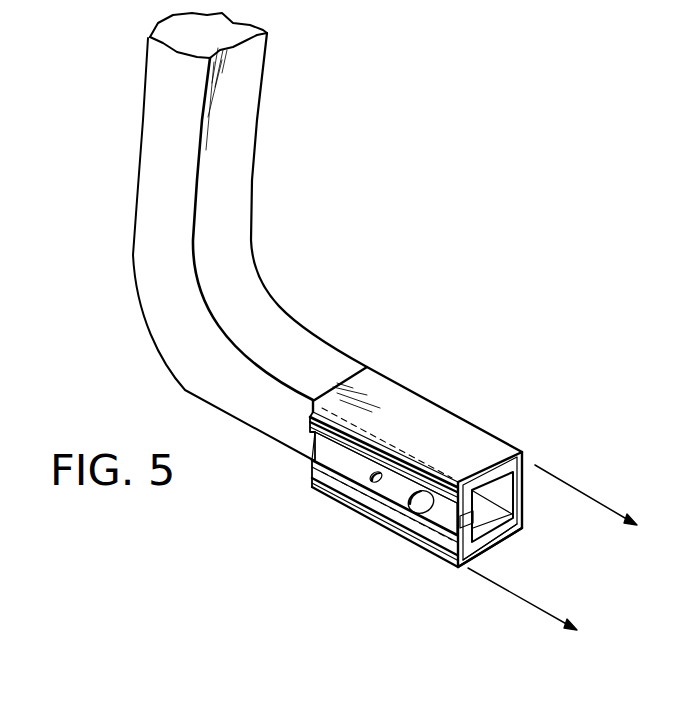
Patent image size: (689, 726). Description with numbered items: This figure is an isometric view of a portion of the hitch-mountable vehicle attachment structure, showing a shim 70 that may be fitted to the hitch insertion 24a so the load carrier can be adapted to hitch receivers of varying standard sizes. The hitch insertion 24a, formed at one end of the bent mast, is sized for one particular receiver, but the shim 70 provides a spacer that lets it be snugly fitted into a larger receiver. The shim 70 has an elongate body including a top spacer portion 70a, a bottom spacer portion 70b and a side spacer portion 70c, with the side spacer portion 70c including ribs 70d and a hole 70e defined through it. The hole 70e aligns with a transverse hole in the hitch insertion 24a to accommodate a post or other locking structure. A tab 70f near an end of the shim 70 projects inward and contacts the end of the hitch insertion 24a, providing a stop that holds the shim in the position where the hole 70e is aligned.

The shim 70 is at (424, 397).
The top spacer portion 70a is at (373, 388).
The bottom spacer portion 70b is at (472, 561).
The side spacer portion 70c is at (313, 483).
The ribs 70d is at (340, 458).
The hole 70e is at (425, 510).
The tab 70f is at (508, 537).
The hitch insertion 24a is at (523, 492).